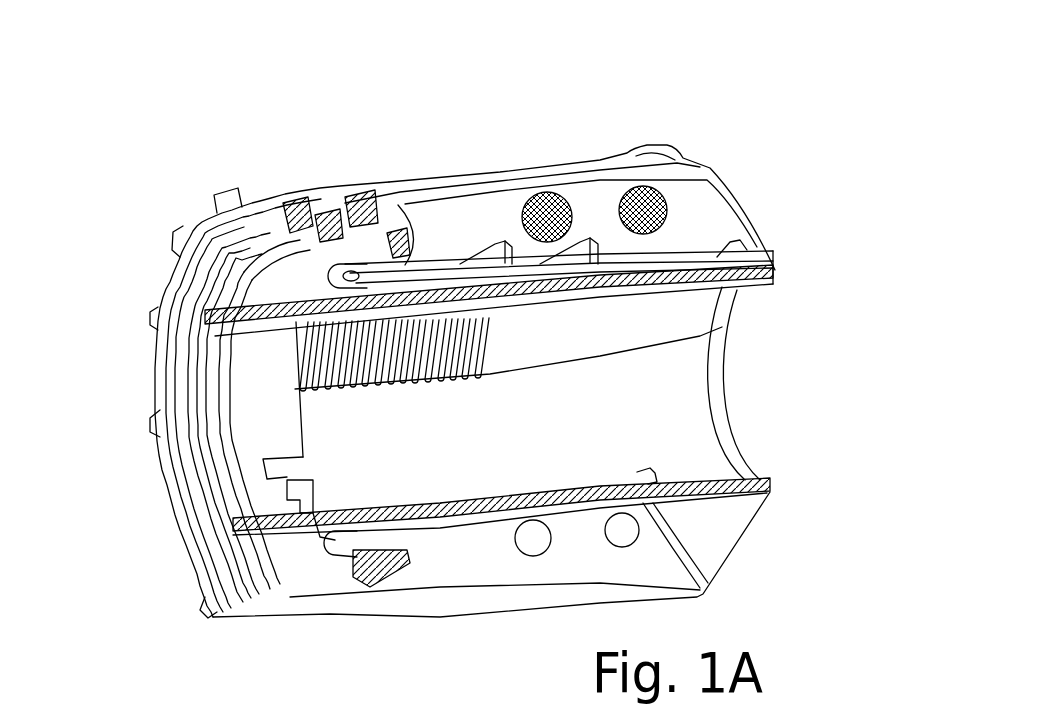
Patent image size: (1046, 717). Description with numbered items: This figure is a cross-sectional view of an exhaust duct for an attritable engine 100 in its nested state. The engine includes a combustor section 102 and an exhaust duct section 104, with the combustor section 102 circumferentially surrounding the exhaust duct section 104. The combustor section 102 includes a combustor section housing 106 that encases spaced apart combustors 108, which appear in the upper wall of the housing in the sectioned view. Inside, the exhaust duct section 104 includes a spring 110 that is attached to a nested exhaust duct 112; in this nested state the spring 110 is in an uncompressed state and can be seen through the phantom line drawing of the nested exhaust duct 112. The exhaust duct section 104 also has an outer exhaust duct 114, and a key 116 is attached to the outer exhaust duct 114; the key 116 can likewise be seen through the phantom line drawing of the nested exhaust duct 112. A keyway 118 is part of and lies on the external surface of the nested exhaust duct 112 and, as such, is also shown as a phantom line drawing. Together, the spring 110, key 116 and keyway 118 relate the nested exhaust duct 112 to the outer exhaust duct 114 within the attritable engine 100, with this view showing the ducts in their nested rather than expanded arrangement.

The attritable engine 100 is at (772, 106).
The combustor section 102 is at (372, 140).
The exhaust duct section 104 is at (772, 440).
The combustor section housing 106 is at (507, 167).
The combustor 108 is at (693, 210).
The spring 110 is at (730, 333).
The nested exhaust duct 112 is at (593, 429).
The outer exhaust duct 114 is at (318, 276).
The key 116 is at (648, 468).
The keyway 118 is at (287, 473).